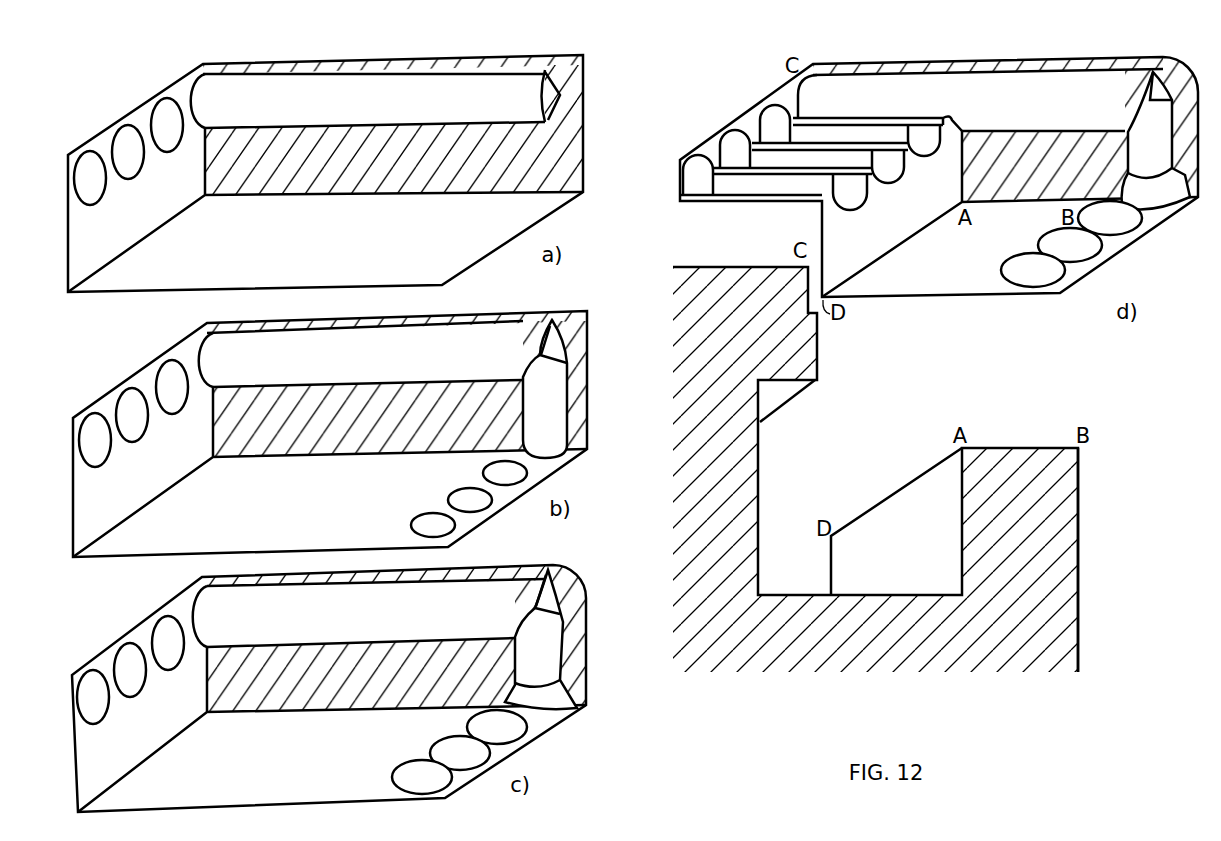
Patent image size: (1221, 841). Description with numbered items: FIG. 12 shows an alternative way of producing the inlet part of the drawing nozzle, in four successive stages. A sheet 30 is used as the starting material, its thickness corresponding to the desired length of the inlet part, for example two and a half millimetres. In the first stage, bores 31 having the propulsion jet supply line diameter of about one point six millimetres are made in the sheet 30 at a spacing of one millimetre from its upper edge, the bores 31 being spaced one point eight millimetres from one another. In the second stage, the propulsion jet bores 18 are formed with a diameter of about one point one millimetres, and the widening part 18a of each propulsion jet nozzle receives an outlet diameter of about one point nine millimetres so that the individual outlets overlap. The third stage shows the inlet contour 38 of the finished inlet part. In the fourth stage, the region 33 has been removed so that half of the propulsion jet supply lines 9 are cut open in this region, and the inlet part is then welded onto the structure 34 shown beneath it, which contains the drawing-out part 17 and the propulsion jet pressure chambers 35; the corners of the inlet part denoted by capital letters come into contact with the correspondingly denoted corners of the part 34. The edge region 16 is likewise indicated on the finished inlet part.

The propulsion jet supply lines 9 is at (1058, 112).
The edge bead 16 is at (1199, 205).
The drawing-out part 17 is at (1078, 548).
The propulsion jet bores 18 is at (555, 422).
The widening part 18a is at (513, 735).
The sheet 30 is at (92, 257).
The bores 31 is at (90, 165).
The region 33 is at (724, 207).
The structure 34 is at (776, 655).
The propulsion jet pressure chambers 35 is at (848, 479).
The inlet contour 38 is at (557, 560).